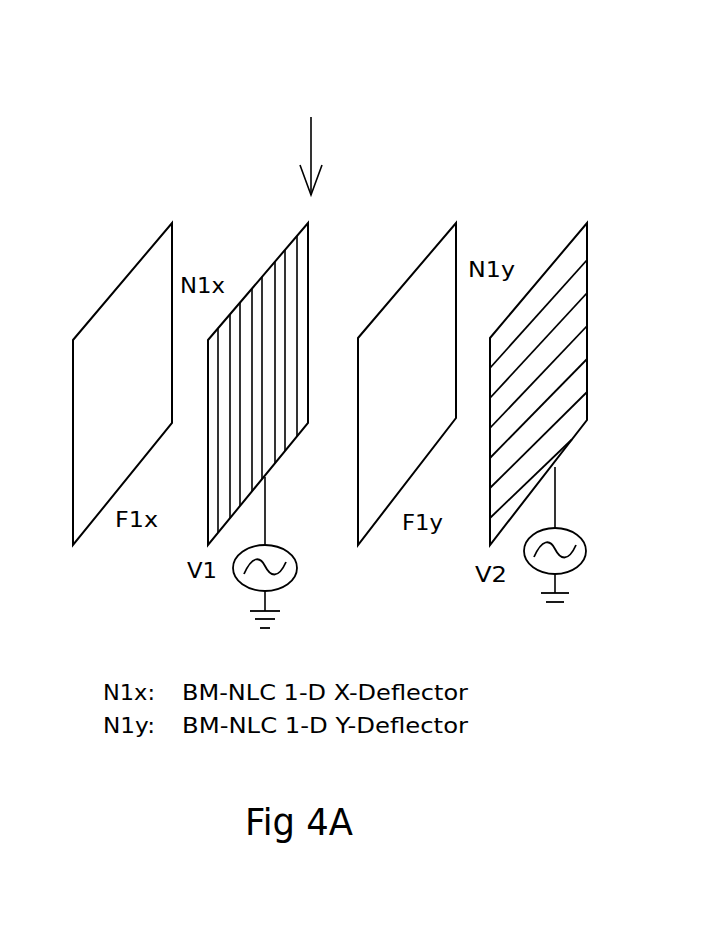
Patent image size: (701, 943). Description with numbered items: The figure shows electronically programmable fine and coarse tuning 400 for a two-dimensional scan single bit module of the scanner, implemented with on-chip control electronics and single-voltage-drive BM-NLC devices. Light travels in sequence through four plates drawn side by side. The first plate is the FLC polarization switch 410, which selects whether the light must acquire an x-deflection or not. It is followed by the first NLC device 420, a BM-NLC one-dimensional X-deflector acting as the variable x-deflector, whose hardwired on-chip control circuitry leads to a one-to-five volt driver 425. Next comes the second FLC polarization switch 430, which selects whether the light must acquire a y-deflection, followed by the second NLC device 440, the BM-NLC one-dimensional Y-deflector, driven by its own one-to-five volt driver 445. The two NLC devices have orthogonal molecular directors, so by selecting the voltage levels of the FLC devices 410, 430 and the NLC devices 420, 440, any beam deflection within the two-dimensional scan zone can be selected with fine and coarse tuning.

The electronically programmable fine and coarse tuning 400 is at (303, 138).
The FLC device F1x 410 is at (110, 305).
The NLC device N1x 420 is at (257, 290).
The 1–5 Volt driver 425 is at (272, 568).
The FLC device F1y 430 is at (408, 292).
The NLC device N1y 440 is at (548, 285).
The 1–5 Volt driver 445 is at (573, 552).